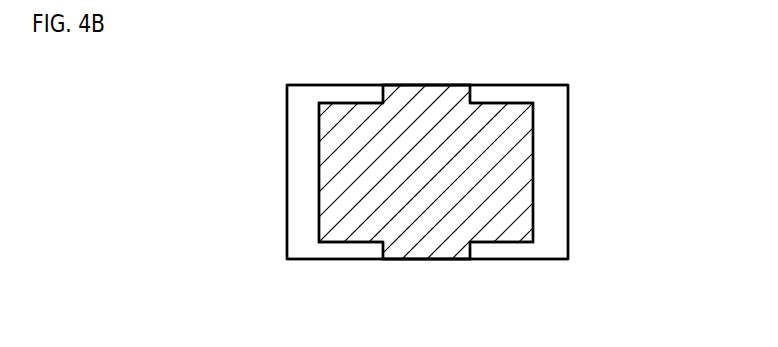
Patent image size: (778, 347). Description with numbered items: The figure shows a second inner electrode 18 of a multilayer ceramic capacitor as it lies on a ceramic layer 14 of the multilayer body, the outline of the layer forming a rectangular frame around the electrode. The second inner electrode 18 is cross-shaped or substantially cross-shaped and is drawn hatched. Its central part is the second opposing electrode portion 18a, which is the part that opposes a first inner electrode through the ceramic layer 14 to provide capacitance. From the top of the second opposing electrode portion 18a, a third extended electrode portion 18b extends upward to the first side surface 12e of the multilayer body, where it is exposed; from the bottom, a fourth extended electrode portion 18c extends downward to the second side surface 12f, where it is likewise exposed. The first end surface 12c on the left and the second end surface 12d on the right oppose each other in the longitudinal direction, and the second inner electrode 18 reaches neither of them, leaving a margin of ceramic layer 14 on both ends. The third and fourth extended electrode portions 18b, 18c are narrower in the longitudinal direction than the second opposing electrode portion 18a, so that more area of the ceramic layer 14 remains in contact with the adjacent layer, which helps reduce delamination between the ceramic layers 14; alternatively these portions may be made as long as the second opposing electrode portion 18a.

The first end surface 12c is at (287, 173).
The second end surface 12d is at (568, 171).
The first side surface 12e is at (505, 86).
The second side surface 12f is at (516, 257).
The ceramic layer 14 is at (562, 97).
The second inner electrode 18 is at (258, 52).
The second opposing electrode portion 18a is at (460, 167).
The third extended electrode portion 18b is at (428, 97).
The fourth extended electrode portion 18c is at (422, 248).